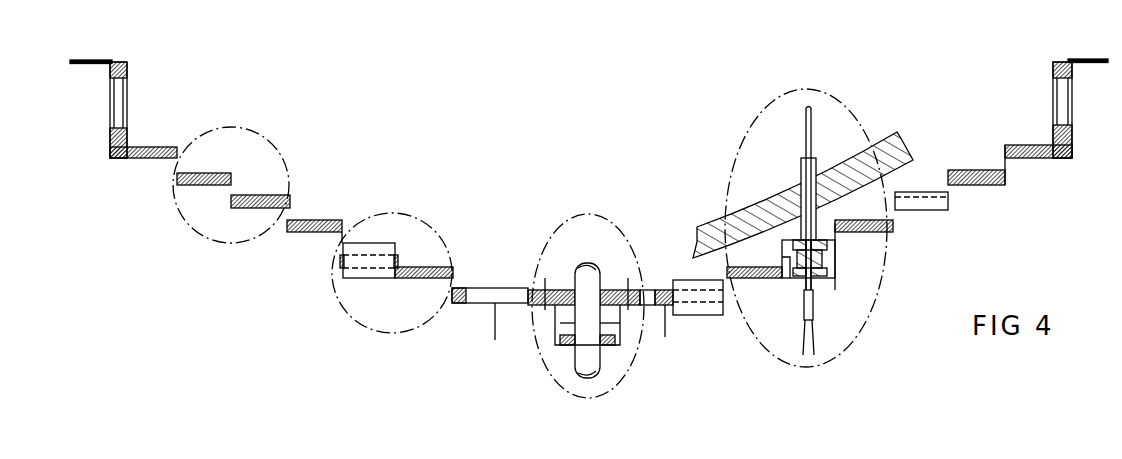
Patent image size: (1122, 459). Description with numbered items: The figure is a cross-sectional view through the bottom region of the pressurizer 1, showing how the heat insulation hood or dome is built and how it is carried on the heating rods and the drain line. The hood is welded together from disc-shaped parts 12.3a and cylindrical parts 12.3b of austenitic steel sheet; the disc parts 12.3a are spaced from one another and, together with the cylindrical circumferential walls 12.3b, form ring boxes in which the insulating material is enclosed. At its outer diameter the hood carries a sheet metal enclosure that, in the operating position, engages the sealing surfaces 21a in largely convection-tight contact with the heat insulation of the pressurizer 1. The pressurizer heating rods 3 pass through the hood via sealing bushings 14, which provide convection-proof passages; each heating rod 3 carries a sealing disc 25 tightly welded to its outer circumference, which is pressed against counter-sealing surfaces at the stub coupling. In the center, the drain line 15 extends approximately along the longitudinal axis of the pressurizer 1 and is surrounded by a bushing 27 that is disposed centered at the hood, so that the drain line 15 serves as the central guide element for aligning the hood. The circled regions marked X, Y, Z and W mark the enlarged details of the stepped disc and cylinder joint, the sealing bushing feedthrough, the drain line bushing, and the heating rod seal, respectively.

The sealing surfaces 21a is at (90, 58).
The cylindrical parts 12.3b is at (288, 222).
The disc-shaped parts 12.3a is at (303, 232).
The sealing bushings 14 is at (365, 273).
The bushing 27 is at (560, 323).
The drain line 15 is at (590, 357).
The pressurizer heating rods 3 is at (812, 138).
The pressurizer 1 is at (899, 156).
The sealing disc 25 is at (821, 260).
The detail X is at (283, 151).
The detail Y is at (397, 214).
The detail Z is at (568, 218).
The detail W is at (863, 132).